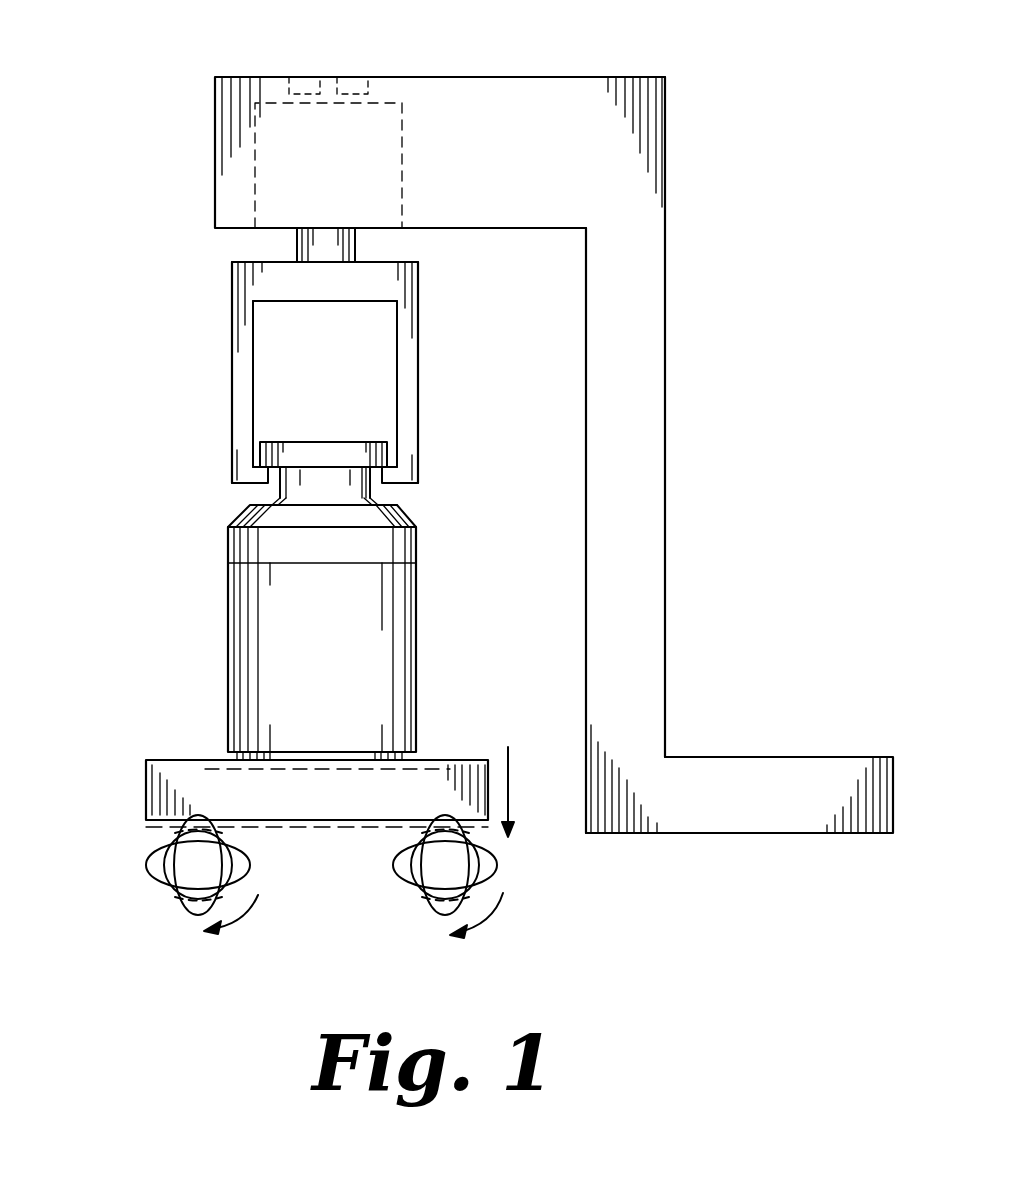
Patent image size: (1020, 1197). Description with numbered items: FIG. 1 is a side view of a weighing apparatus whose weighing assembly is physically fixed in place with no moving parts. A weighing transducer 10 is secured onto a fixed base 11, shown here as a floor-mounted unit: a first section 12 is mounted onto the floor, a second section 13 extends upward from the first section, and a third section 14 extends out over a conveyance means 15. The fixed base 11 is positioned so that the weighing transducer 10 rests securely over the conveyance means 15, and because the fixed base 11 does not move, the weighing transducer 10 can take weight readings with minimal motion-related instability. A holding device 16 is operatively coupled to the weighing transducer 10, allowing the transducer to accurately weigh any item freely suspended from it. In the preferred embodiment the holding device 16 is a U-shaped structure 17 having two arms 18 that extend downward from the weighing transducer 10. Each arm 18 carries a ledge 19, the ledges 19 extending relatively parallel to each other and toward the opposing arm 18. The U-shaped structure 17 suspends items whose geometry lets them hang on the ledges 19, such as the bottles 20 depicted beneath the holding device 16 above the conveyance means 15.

The weighing transducer 10 is at (380, 172).
The fixed base 11 is at (554, 428).
The first section 12 is at (812, 774).
The second section 13 is at (650, 382).
The third section 14 is at (567, 105).
The conveyance means 15 is at (150, 790).
The holding device 16 is at (232, 360).
The U-shaped structure 17 is at (418, 355).
The arms 18 is at (232, 435).
The ledges 19 is at (246, 485).
The bottles 20 is at (258, 682).